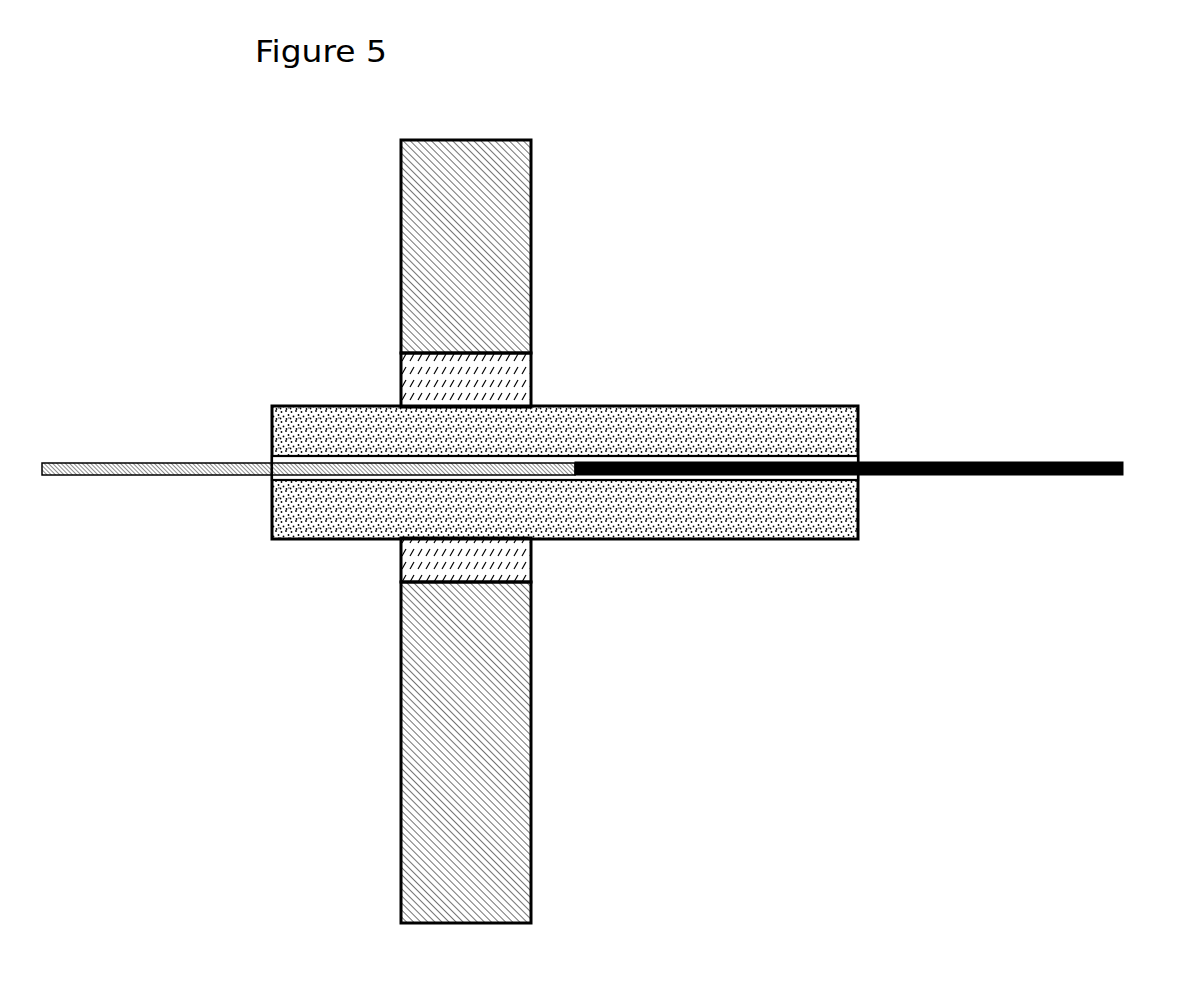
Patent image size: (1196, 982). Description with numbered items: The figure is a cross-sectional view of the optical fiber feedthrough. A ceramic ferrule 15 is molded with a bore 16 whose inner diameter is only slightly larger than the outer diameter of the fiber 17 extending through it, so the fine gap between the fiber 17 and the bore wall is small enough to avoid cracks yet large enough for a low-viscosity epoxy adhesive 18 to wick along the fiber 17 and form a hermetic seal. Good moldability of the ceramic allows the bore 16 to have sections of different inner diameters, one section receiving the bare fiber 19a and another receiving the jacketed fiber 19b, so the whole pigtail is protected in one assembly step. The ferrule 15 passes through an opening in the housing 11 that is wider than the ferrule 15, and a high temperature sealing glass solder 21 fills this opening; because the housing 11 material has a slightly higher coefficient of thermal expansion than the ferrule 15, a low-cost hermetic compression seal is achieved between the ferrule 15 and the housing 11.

The housing 11 is at (497, 317).
The sealing glass solder 21 is at (413, 380).
The ceramic ferrule 15 is at (753, 543).
The bore 16 is at (860, 482).
The fiber 17 is at (927, 462).
The adhesive 18 is at (270, 480).
The bare fiber 19a is at (153, 475).
The jacketed fiber 19b is at (1000, 477).